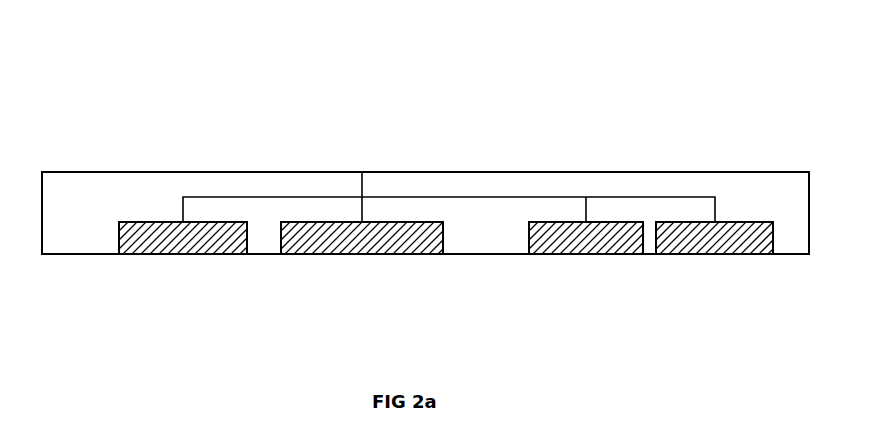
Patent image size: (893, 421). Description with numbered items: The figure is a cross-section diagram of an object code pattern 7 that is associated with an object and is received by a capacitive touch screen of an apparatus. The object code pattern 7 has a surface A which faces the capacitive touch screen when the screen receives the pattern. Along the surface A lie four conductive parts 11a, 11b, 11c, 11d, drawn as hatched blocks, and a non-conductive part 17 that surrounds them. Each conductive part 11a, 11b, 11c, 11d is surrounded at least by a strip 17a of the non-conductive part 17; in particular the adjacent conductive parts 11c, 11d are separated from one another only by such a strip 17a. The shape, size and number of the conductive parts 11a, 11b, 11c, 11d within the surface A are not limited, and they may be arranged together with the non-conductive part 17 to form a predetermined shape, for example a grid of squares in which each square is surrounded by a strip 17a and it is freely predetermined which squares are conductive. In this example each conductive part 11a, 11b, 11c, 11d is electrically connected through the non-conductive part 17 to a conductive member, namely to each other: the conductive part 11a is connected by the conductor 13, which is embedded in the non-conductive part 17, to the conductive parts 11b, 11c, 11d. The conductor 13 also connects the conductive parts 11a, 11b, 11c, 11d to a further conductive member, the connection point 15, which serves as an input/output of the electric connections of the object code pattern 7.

The object code pattern 7 is at (148, 64).
The surface A is at (65, 254).
The conductive part 11a is at (163, 254).
The conductive part 11b is at (335, 254).
The conductive part 11c is at (564, 254).
The conductive part 11d is at (735, 254).
The conductor 13 is at (263, 197).
The connection point 15 is at (362, 172).
The non-conductive part 17 is at (476, 240).
The strip of non-conductive part 17a is at (650, 244).